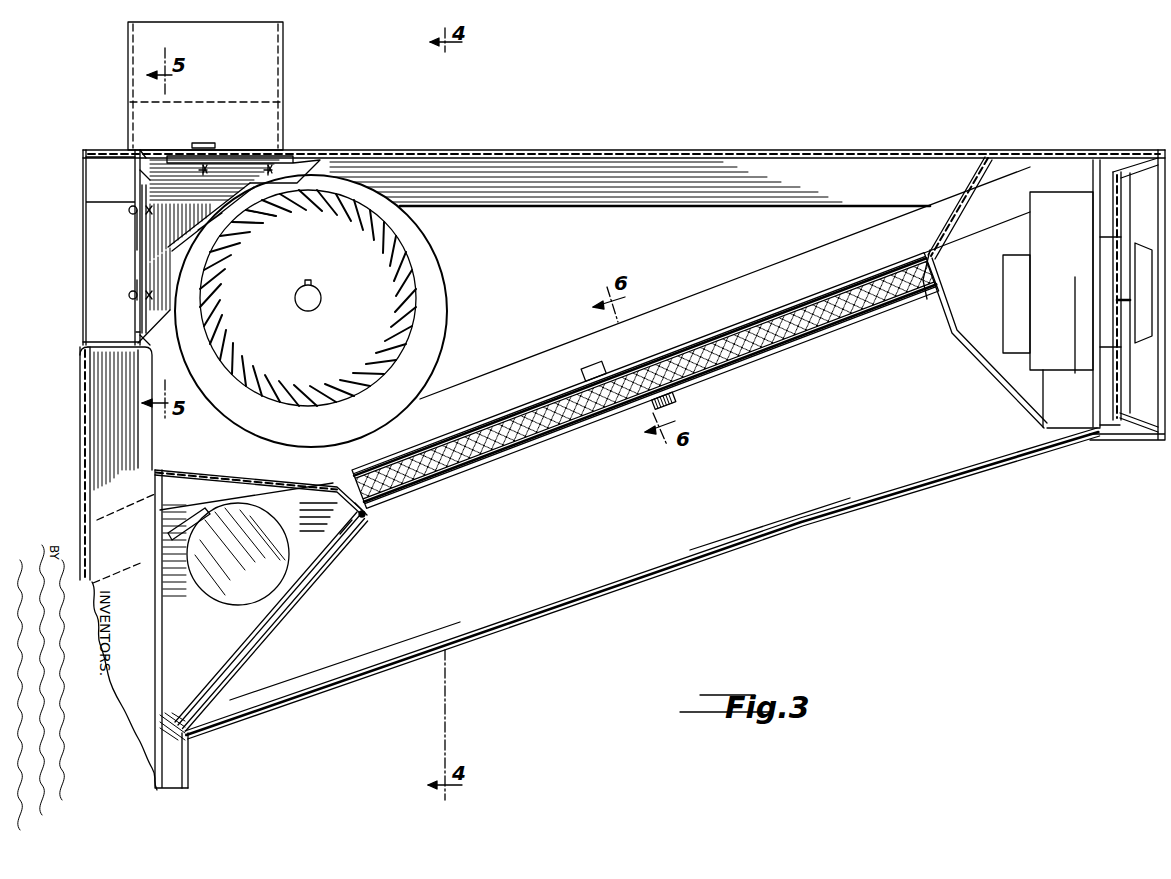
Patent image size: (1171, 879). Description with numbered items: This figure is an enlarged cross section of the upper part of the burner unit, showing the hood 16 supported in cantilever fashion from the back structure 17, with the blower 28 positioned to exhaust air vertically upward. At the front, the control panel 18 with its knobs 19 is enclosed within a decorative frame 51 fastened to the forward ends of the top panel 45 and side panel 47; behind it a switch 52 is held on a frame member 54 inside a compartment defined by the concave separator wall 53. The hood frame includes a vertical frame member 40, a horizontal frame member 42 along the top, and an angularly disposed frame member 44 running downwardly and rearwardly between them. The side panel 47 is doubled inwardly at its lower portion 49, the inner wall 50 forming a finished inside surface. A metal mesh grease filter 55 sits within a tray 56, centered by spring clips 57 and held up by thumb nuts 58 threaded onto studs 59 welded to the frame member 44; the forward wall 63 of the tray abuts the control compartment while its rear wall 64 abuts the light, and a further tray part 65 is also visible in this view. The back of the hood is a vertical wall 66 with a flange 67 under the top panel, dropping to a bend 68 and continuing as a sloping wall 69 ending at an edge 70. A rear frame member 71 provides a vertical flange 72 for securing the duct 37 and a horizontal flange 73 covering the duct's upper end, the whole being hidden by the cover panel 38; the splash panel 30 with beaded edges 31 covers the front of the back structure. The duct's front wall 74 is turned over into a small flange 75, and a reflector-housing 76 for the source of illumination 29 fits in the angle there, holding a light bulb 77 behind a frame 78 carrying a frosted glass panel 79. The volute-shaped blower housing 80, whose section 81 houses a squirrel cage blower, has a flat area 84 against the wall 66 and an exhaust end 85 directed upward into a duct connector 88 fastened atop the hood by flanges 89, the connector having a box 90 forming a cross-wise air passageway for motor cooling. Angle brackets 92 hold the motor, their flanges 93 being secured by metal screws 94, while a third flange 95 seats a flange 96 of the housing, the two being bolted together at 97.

The hood 16 is at (982, 556).
The back structure 17 is at (198, 765).
The control panel 18 is at (1130, 222).
The knobs 19 is at (1148, 330).
The blower 28 is at (449, 268).
The source of illumination 29 is at (318, 578).
The splash panel 30 is at (175, 790).
The beaded edges 31 is at (190, 792).
The duct 37 is at (121, 615).
The cover panel 38 is at (80, 478).
The vertical frame member 40 is at (95, 296).
The horizontal frame member 42 is at (95, 186).
The angularly disposed frame member 44 is at (1050, 192).
The top panel 45 is at (540, 150).
The side panel 47 is at (699, 245).
The doubled lower portion 49 is at (650, 575).
The inner wall 50 is at (629, 515).
The decorative frame 51 is at (1135, 440).
The switch 52 is at (1048, 309).
The separator wall 53 is at (968, 350).
The frame member 54 is at (1100, 250).
The grease filter 55 is at (800, 335).
The tray 56 is at (780, 355).
The spring clips 57 is at (610, 375).
The thumb nuts 58 is at (668, 405).
The studs 59 is at (634, 415).
The forward wall 63 is at (930, 296).
The rear wall 64 is at (365, 510).
The filter frame 65 is at (578, 432).
The vertical wall 66 is at (140, 326).
The flange 67 is at (135, 152).
The bend 68 is at (150, 468).
The sloping wall 69 is at (213, 475).
The edge 70 is at (340, 487).
The horizontal frame member 71 is at (85, 350).
The vertical flange 72 is at (85, 380).
The horizontal flange 73 is at (148, 338).
The front wall 74 is at (165, 540).
The flange 75 is at (166, 470).
The reflector-housing 76 is at (163, 624).
The light bulb 77 is at (236, 605).
The frame 78 is at (362, 518).
The frosted glass panel 79 is at (282, 600).
The blower housing 80 is at (440, 315).
The blower section 81 is at (308, 298).
The flat area 84 is at (147, 232).
The exhaust end 85 is at (232, 163).
The duct connector 88 is at (285, 80).
The flanges 89 is at (232, 150).
The box 90 is at (207, 102).
The angle brackets 92 is at (150, 183).
The flanges 93 is at (290, 158).
The metal screws 94 is at (275, 150).
The third flange 95 is at (200, 190).
The flange 96 is at (250, 212).
The bolt 97 is at (228, 230).